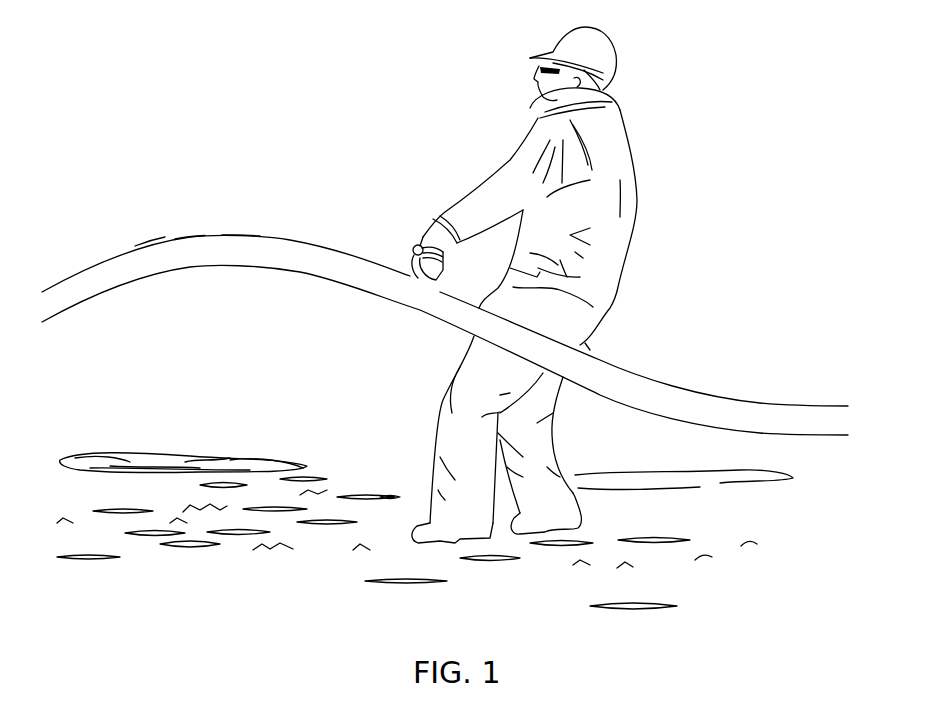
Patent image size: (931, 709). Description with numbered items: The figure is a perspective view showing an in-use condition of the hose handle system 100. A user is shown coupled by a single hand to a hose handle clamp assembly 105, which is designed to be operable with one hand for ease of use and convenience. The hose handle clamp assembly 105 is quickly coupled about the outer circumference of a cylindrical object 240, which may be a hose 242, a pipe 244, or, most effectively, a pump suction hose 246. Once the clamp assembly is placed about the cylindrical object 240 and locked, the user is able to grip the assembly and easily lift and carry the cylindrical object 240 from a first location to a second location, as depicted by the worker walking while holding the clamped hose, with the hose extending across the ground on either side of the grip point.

The hose handle system 100 is at (332, 100).
The hose handle clamp assembly 105 is at (313, 124).
The cylindrical object 240 is at (113, 250).
The hose 242 is at (147, 240).
The pipe 244 is at (186, 230).
The pump suction hose 246 is at (233, 228).